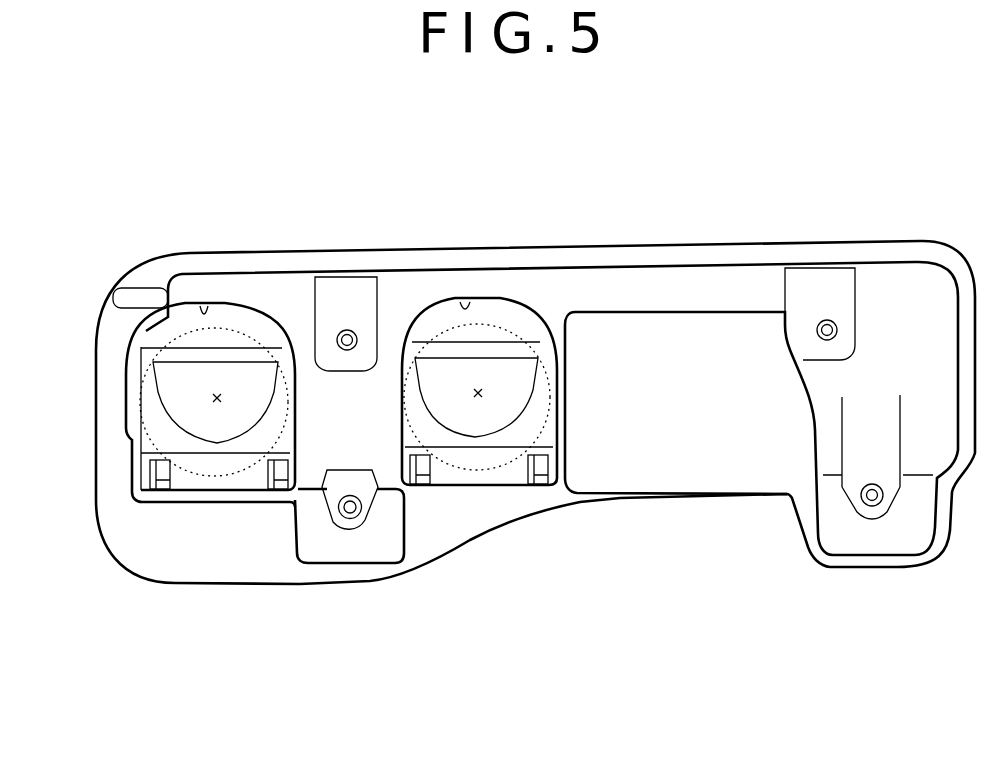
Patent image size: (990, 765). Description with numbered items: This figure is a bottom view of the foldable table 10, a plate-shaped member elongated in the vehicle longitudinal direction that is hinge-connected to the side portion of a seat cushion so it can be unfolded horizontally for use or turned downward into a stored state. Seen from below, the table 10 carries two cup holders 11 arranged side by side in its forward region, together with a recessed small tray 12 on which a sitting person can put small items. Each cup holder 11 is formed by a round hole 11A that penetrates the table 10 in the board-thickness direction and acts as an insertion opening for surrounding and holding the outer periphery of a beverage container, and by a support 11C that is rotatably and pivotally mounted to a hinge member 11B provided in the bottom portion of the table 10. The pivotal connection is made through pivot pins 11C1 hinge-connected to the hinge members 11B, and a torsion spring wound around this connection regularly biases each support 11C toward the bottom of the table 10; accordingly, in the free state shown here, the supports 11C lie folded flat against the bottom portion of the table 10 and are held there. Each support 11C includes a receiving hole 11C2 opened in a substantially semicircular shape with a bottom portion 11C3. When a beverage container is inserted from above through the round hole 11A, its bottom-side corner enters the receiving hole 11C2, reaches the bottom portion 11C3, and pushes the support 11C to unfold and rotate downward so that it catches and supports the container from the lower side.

The table 10 is at (858, 160).
The cup holder 11 is at (240, 191).
The round hole 11A is at (202, 300).
The hinge member 11B is at (160, 475).
The support 11C is at (187, 333).
The pivot pin 11C1 is at (387, 552).
The receiving hole 11C2 is at (222, 398).
The bottom portion of the receiving hole 11C3 is at (227, 353).
The small tray 12 is at (717, 345).